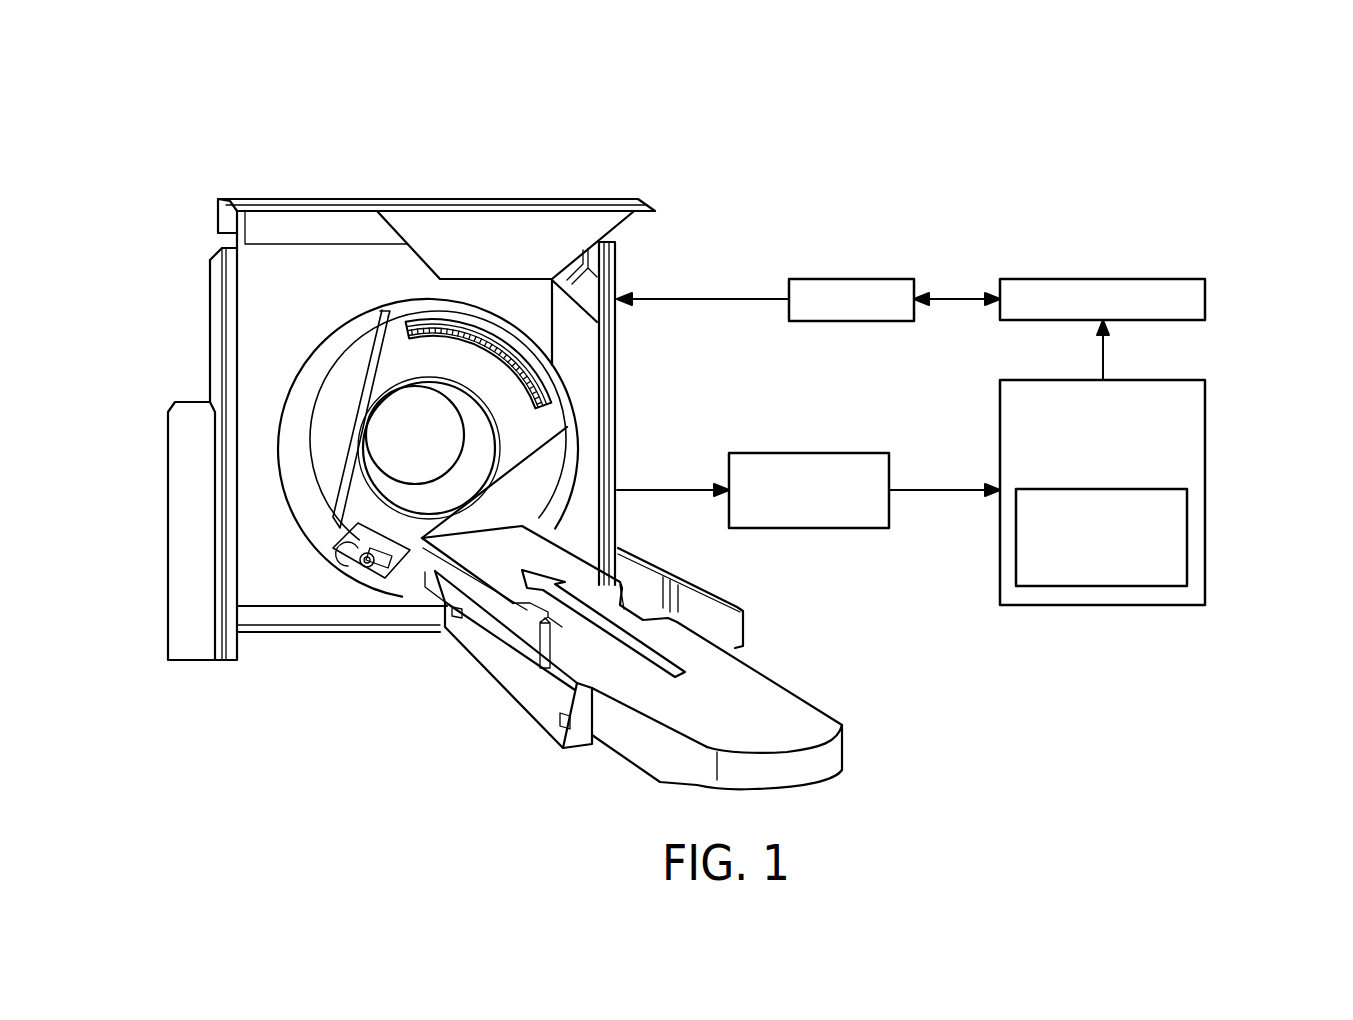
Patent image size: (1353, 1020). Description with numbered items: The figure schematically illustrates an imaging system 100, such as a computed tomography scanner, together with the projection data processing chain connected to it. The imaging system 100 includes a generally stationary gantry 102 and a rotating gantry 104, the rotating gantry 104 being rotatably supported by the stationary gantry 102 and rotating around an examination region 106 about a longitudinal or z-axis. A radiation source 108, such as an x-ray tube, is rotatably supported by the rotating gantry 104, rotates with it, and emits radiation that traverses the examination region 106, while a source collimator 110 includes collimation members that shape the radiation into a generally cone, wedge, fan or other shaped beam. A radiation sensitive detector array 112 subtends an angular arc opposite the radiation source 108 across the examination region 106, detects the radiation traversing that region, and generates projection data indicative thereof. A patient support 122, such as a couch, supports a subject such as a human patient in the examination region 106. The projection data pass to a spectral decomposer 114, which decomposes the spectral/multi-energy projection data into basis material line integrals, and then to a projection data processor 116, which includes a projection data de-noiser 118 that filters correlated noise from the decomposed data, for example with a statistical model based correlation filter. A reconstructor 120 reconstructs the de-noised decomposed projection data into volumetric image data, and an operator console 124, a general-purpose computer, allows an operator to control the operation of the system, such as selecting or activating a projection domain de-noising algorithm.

The imaging system 100 is at (266, 154).
The stationary gantry 102 is at (230, 346).
The rotating gantry 104 is at (398, 358).
The examination region 106 is at (434, 445).
The radiation source 108 is at (360, 568).
The source collimator 110 is at (389, 558).
The radiation sensitive detector array 112 is at (533, 378).
The spectral decomposer 114 is at (807, 452).
The projection data processor 116 is at (1205, 406).
The projection data de-noiser 118 is at (1180, 515).
The reconstructor 120 is at (1100, 278).
The patient support 122 is at (782, 722).
The operator console 124 is at (850, 278).